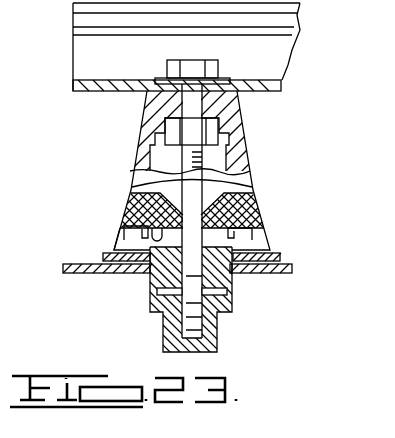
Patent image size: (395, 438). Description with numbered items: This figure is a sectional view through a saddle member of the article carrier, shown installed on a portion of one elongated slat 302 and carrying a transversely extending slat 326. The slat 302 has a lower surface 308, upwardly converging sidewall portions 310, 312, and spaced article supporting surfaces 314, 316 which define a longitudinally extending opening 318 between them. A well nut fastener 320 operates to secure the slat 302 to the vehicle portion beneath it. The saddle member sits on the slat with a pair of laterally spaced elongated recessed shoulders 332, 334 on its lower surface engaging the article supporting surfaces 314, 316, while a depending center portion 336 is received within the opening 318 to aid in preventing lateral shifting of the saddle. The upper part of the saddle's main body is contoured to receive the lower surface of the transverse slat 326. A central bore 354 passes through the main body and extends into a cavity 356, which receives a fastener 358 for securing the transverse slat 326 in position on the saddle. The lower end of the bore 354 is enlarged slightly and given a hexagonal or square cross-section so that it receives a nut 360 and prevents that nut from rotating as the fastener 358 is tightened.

The elongated slat 302 is at (283, 253).
The lower surface 308 is at (250, 272).
The upwardly converging sidewall portion 310 is at (267, 243).
The upwardly converging sidewall portion 312 is at (115, 246).
The article supporting surface 314 is at (243, 215).
The article supporting surface 316 is at (133, 207).
The longitudinally extending opening 318 is at (250, 188).
The well nut fastener 320 is at (150, 297).
The transversely extending slat 326 is at (268, 55).
The recessed shoulder 332 is at (245, 228).
The recessed shoulder 334 is at (120, 232).
The depending center portion 336 is at (130, 190).
The central bore 354 is at (188, 97).
The cavity 356 is at (163, 157).
The fastener 358 is at (193, 107).
The nut 360 is at (243, 147).